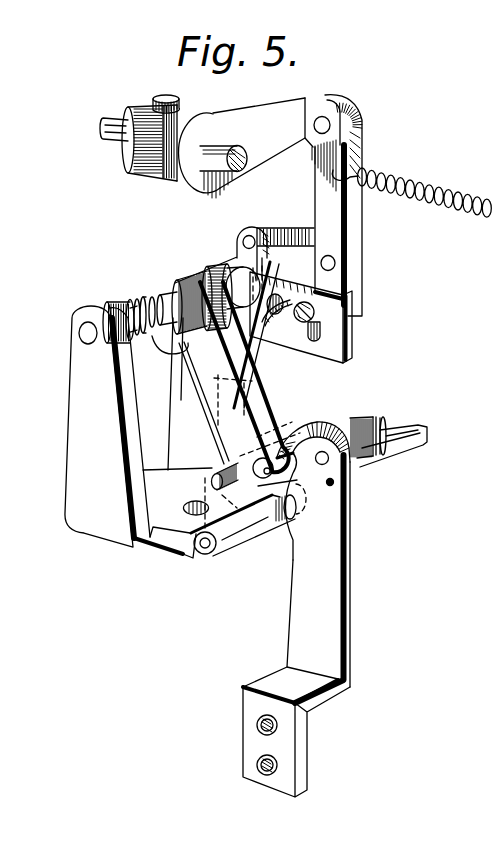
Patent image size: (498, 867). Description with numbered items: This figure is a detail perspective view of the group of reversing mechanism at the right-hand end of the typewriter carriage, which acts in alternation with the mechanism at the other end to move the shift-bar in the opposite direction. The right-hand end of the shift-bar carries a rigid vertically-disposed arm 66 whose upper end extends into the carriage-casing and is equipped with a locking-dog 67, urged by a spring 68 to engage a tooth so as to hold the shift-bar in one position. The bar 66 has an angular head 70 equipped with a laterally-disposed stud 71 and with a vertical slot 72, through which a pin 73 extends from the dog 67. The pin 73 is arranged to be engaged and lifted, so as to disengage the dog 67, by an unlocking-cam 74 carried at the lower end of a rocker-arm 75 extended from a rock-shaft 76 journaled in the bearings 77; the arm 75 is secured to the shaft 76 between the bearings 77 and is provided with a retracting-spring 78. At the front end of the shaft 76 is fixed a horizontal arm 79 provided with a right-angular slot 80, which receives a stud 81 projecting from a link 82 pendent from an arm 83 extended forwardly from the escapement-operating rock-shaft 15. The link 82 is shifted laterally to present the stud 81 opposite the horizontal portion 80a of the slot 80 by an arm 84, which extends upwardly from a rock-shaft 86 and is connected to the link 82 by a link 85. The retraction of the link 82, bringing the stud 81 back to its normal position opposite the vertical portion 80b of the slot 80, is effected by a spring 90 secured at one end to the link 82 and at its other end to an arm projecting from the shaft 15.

The rock-shaft 15 is at (112, 140).
The arm 66 is at (327, 610).
The locking-dog 67 is at (315, 424).
The spring 68 is at (368, 473).
The angular head 70 is at (225, 463).
The stud 71 is at (216, 477).
The vertical slot 72 is at (258, 440).
The pin 73 is at (262, 468).
The unlocking-cam 74 is at (292, 450).
The rocker-arm 75 is at (204, 398).
The rock-shaft 76 is at (180, 284).
The bearings 77 is at (78, 397).
The retracting-spring 78 is at (130, 304).
The horizontal arm 79 is at (348, 351).
The right-angular slot 80 is at (282, 296).
The horizontal portion of the slot 80a is at (287, 305).
The vertical portion of the slot 80b is at (315, 339).
The stud 81 is at (309, 316).
The link 82 is at (355, 231).
The arm 83 is at (276, 148).
The arm 84 is at (238, 255).
The link 85 is at (283, 242).
The rock-shaft 86 is at (411, 449).
The spring 90 is at (410, 180).